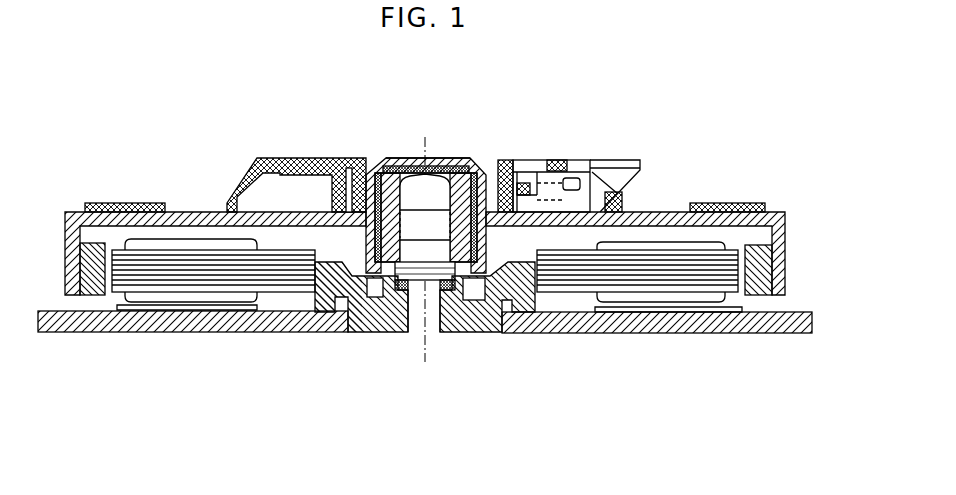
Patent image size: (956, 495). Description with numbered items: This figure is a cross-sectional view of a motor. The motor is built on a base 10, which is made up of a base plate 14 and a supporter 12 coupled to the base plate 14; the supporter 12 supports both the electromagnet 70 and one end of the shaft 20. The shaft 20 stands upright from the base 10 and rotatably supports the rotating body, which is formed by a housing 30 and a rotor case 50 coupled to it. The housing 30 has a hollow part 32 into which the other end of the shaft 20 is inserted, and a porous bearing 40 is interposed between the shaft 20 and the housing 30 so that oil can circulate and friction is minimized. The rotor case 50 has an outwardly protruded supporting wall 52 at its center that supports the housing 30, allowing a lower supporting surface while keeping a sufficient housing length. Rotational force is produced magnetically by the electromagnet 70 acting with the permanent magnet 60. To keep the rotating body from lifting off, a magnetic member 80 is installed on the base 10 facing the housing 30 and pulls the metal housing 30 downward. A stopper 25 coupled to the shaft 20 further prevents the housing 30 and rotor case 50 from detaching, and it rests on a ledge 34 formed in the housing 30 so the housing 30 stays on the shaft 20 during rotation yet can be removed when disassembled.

The base 10 is at (567, 427).
The supporter 12 is at (484, 333).
The base plate 14 is at (563, 333).
The shaft 20 is at (440, 185).
The stopper 25 is at (397, 323).
The housing 30 is at (486, 163).
The hollow part 32 is at (356, 160).
The ledge 34 is at (366, 322).
The porous bearing 40 is at (366, 263).
The rotor case 50 is at (673, 212).
The supporting wall 52 is at (382, 160).
The permanent magnet 60 is at (773, 263).
The electromagnet 70 is at (688, 280).
The magnetic member 80 is at (483, 297).